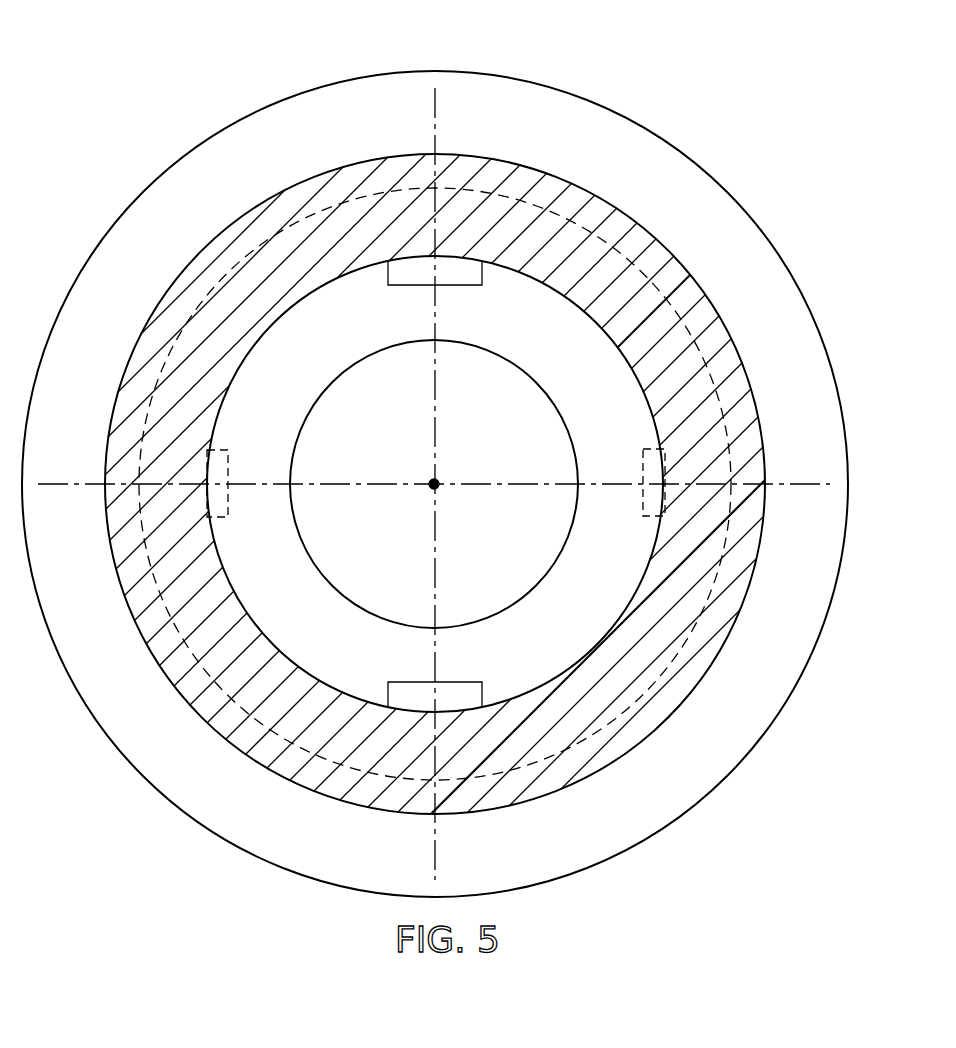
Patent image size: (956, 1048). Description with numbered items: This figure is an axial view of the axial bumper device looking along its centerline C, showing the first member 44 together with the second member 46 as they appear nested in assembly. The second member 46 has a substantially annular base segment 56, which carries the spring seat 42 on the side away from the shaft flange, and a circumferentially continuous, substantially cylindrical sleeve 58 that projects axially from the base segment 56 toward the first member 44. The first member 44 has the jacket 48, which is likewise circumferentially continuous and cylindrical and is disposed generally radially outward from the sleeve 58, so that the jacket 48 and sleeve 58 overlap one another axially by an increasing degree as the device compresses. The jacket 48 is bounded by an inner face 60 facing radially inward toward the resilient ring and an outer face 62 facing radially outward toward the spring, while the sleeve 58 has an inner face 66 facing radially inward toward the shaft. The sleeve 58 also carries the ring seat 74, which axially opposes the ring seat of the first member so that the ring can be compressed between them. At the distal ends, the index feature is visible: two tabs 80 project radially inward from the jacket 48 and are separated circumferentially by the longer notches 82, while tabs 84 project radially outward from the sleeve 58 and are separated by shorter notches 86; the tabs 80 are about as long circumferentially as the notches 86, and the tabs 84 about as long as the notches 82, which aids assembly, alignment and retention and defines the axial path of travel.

The spring seat 42 is at (548, 86).
The first member 44 is at (265, 197).
The second member 46 is at (262, 103).
The jacket 48 is at (625, 205).
The base segment 56 is at (632, 130).
The sleeve 58 is at (630, 330).
The inner face 60 is at (566, 672).
The outer face 62 is at (585, 780).
The inner face 66 is at (338, 590).
The ring seat 74 is at (305, 389).
The tabs 80 is at (229, 507).
The notches 82 is at (465, 273).
The tabs 84 is at (285, 342).
The notches 86 is at (413, 268).
The center axis C is at (438, 476).